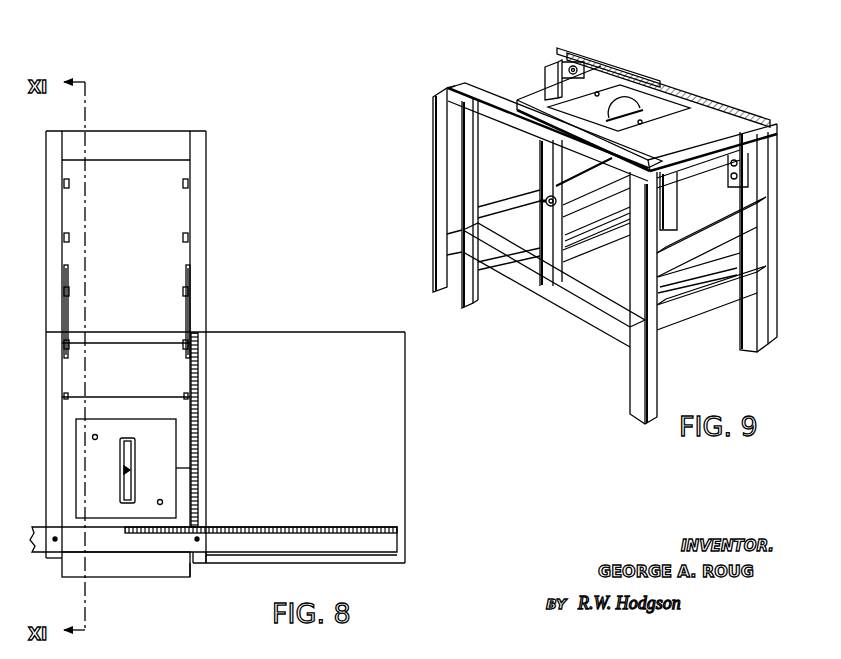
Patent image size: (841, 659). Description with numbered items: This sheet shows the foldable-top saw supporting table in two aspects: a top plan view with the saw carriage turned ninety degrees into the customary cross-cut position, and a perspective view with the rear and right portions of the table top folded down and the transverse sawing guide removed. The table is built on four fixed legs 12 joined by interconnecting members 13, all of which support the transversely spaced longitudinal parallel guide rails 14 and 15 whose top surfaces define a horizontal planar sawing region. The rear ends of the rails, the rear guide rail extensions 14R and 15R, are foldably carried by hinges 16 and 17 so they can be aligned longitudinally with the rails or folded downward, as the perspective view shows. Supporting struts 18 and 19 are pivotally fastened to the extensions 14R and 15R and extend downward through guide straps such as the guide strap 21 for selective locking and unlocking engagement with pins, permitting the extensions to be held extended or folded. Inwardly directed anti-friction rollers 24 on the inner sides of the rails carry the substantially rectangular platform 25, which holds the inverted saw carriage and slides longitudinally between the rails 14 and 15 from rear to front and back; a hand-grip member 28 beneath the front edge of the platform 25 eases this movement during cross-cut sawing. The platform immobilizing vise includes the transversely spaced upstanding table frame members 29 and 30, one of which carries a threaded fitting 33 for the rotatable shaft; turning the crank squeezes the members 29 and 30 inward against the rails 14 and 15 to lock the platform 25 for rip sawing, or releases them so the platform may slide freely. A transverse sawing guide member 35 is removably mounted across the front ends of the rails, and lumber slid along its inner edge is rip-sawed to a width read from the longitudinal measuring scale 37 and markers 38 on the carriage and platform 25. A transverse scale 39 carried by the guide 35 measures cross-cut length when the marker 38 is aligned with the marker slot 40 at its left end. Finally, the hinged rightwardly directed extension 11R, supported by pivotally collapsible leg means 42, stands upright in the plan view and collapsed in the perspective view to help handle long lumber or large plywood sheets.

In FIG. 8, the rightwardly directed extension 11R is at (387, 445).
In FIG. 9, the rightwardly directed extension 11R is at (728, 330).
In FIG. 9, the fixed legs 12 is at (463, 295).
In FIG. 8, the interconnecting members 13 is at (150, 337).
In FIG. 9, the interconnecting members 13 is at (508, 208).
In FIG. 9, the guide rail 14 is at (466, 86).
In FIG. 8, the rear guide rail extension 14R is at (54, 167).
In FIG. 9, the rear guide rail extension 14R is at (437, 227).
In FIG. 9, the guide rail 15 is at (640, 72).
In FIG. 8, the rear guide rail extension 15R is at (200, 151).
In FIG. 9, the rear guide rail extension 15R is at (548, 82).
In FIG. 9, the hinge 16 is at (432, 97).
In FIG. 9, the hinge 17 is at (556, 62).
In FIG. 8, the supporting strut 18 is at (67, 312).
In FIG. 9, the supporting strut 18 is at (512, 263).
In FIG. 8, the supporting strut 19 is at (187, 311).
In FIG. 9, the supporting strut 19 is at (592, 198).
In FIG. 9, the guide strap 21 is at (560, 192).
In FIG. 8, the anti-friction rollers 24 is at (68, 184).
In FIG. 9, the anti-friction rollers 24 is at (582, 72).
In FIG. 8, the platform 25 is at (197, 579).
In FIG. 9, the platform 25 is at (722, 126).
In FIG. 9, the hand-grip member 28 is at (745, 159).
In FIG. 9, the upstanding table frame (vise) member 29 is at (549, 162).
In FIG. 9, the upstanding table frame (vise) member 30 is at (672, 194).
In FIG. 9, the threaded fitting 33 is at (605, 117).
In FIG. 8, the transverse sawing guide member 35 is at (318, 543).
In FIG. 8, the longitudinal measuring scale 37 is at (196, 420).
In FIG. 9, the longitudinal measuring scale 37 is at (640, 82).
In FIG. 8, the markers 38 is at (124, 425).
In FIG. 9, the markers 38 is at (655, 100).
In FIG. 8, the transverse scale 39 is at (298, 527).
In FIG. 8, the marker slot 40 is at (125, 531).
In FIG. 9, the pivotally collapsible leg means 42 is at (626, 240).